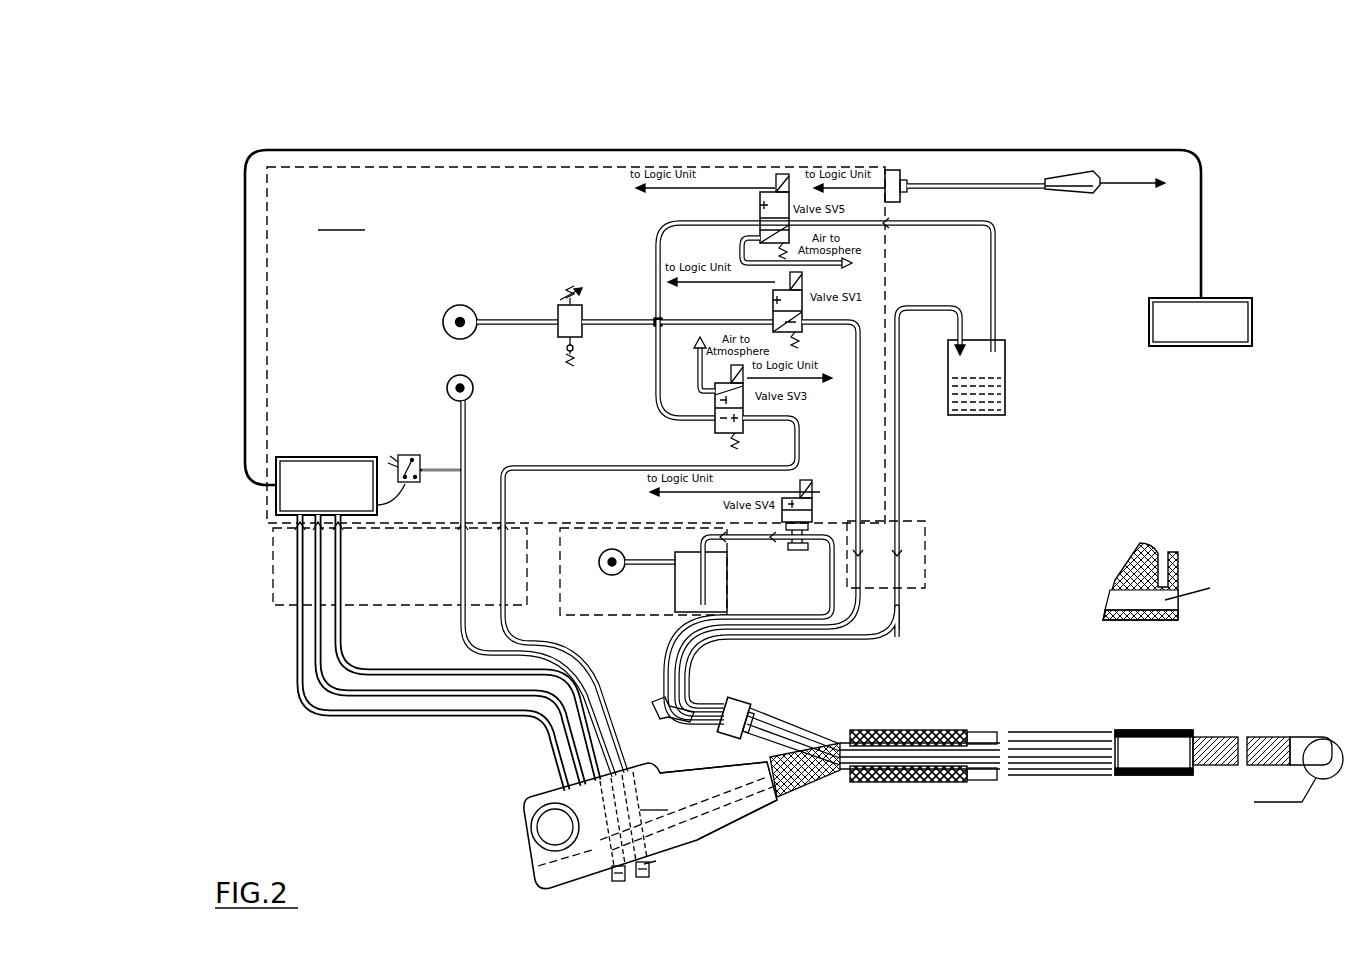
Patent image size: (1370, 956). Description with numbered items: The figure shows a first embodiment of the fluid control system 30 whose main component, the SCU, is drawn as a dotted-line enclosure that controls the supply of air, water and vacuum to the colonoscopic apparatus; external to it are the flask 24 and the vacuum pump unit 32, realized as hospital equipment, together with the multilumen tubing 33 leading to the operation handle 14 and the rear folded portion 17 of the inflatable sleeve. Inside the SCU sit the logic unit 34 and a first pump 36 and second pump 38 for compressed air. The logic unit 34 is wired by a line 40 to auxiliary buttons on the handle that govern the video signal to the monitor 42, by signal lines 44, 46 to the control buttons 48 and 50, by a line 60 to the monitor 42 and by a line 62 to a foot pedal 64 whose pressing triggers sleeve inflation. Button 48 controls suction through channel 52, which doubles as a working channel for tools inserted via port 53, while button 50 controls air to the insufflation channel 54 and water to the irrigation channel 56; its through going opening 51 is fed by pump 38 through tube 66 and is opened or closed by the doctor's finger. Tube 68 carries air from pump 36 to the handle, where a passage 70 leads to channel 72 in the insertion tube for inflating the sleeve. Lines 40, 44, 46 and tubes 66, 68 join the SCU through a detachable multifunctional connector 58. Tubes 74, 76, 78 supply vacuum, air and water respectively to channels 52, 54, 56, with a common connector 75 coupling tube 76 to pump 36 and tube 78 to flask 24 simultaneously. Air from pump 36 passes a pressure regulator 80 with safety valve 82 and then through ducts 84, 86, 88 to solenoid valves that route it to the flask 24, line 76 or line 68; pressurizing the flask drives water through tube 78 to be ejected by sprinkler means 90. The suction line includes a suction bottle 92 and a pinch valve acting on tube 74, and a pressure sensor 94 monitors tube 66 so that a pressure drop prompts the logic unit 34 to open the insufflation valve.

The operation handle 14 is at (652, 825).
The rear folded portion 17 is at (1135, 773).
The flask 24 is at (1005, 372).
The fluid control system 30 is at (609, 148).
The vacuum pump unit 32 is at (592, 552).
The multilumen tubing 33 is at (822, 738).
The logic unit 34 is at (300, 464).
The first pump 36 is at (445, 334).
The second pump 38 is at (447, 386).
The line 40 is at (303, 716).
The monitor 42 is at (1160, 345).
The signal line 44 is at (315, 658).
The signal line 46 is at (392, 678).
The control button 48 is at (610, 876).
The control button 50 is at (656, 866).
The through going opening 51 is at (648, 880).
The channel 52 is at (895, 773).
The port 53 is at (655, 700).
The insufflation channel 54 is at (1088, 748).
The irrigation channel 56 is at (982, 735).
The multifunctional connector 58 is at (350, 592).
The line 60 is at (245, 343).
The line 62 is at (1002, 184).
The foot pedal 64 is at (1085, 186).
The tube 66 is at (463, 632).
The tube 68 is at (505, 644).
The passage 70 is at (746, 800).
The channel 72 is at (1025, 770).
The tube 74 is at (670, 667).
The common connector 75 is at (925, 582).
The tube 76 is at (712, 660).
The tube 78 is at (800, 640).
The pressure regulator 80 is at (583, 320).
The safety valve 82 is at (566, 356).
The duct 84 is at (655, 247).
The duct 86 is at (713, 322).
The duct 88 is at (657, 372).
The sprinkler means 90 is at (1328, 742).
The suction bottle 92 is at (718, 565).
The pressure sensor 94 is at (408, 484).